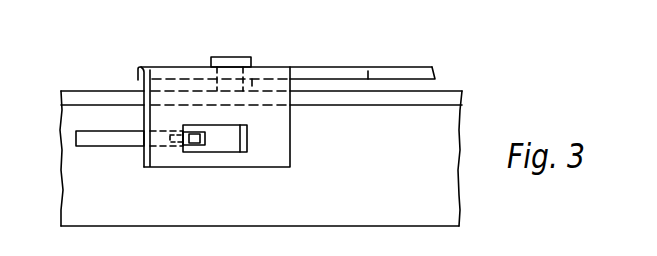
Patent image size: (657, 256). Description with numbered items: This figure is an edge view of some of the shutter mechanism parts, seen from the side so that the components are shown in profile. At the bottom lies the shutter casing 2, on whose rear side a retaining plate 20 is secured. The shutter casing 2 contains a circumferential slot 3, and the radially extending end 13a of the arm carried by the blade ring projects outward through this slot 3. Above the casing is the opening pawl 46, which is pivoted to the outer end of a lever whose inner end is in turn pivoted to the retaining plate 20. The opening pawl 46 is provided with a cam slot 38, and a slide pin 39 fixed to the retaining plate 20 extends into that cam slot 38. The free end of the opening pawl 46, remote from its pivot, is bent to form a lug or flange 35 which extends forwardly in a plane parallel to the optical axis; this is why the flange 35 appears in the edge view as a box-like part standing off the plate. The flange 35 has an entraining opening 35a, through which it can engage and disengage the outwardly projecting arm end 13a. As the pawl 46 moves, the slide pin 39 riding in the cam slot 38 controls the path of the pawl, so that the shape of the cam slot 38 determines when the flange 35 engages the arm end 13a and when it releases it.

The shutter casing 2 is at (75, 177).
The circumferential slot 3 is at (128, 139).
The radially extending end of the arm 13a is at (193, 139).
The retaining plate 20 is at (450, 101).
The lug or flange 35 is at (292, 162).
The entraining opening 35a is at (244, 140).
The cam slot 38 is at (337, 73).
The slide pin 39 is at (233, 62).
The opening pawl 46 is at (388, 76).